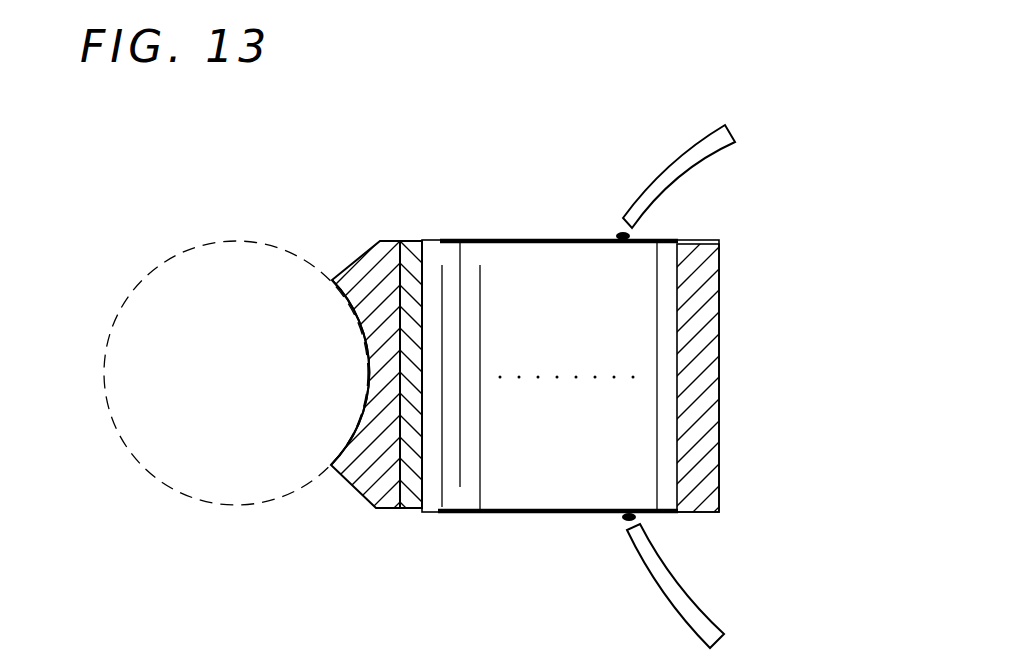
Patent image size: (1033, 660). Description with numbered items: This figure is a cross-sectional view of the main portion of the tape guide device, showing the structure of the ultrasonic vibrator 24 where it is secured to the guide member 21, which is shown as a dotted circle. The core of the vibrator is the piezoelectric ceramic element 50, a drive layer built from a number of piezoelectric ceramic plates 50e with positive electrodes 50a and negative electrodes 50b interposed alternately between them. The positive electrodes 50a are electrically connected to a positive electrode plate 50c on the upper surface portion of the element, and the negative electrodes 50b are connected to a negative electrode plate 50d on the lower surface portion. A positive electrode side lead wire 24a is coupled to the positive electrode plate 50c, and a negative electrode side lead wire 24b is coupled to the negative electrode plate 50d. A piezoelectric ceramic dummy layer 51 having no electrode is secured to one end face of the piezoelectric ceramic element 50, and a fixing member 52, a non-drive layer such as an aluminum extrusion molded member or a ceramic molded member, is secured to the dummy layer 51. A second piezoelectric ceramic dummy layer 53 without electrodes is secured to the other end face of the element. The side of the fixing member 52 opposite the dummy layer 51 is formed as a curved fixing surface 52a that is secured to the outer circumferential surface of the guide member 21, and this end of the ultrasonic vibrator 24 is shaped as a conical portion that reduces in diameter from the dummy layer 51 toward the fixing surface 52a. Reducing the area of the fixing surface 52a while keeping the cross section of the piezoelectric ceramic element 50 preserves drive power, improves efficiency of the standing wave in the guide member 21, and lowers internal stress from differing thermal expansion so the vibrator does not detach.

The guide member 21 is at (163, 262).
The ultrasonic vibrator 24 is at (739, 298).
The positive electrode side lead wire 24a is at (710, 161).
The negative electrode side lead wire 24b is at (688, 592).
The piezoelectric ceramic element 50 is at (618, 450).
The positive electrodes 50a is at (461, 276).
The negative electrodes 50b is at (482, 444).
The positive electrode plate 50c is at (572, 238).
The negative electrode plate 50d is at (598, 518).
The piezoelectric ceramic plates 50e is at (453, 473).
The piezoelectric ceramic dummy layer 51 is at (414, 243).
The fixing member 52 is at (348, 248).
The fixing surface 52a is at (363, 417).
The piezoelectric ceramic dummy layer 53 is at (708, 373).